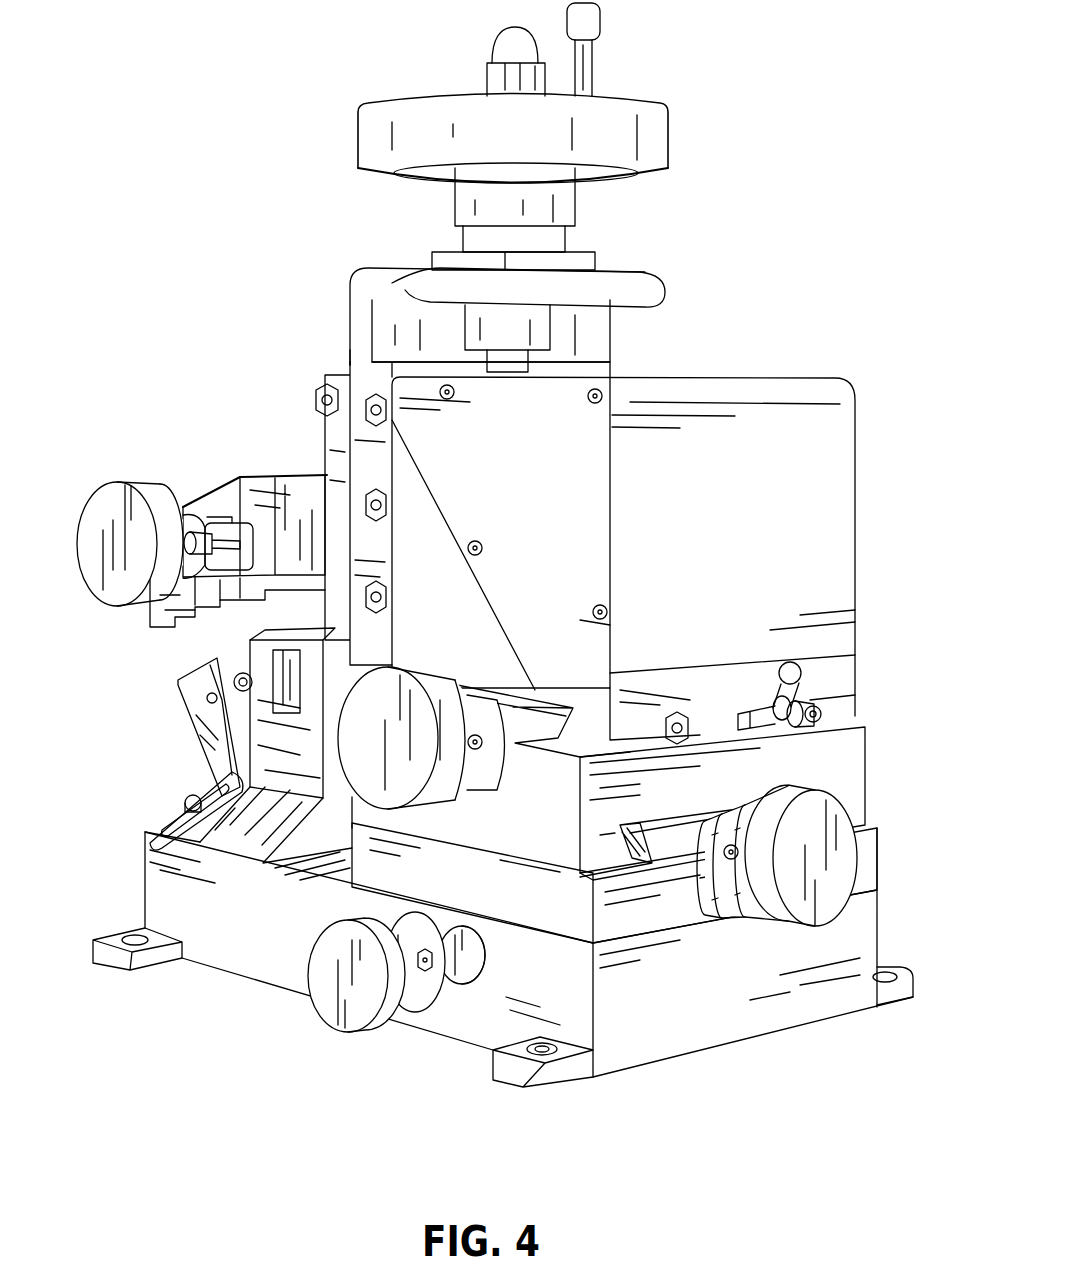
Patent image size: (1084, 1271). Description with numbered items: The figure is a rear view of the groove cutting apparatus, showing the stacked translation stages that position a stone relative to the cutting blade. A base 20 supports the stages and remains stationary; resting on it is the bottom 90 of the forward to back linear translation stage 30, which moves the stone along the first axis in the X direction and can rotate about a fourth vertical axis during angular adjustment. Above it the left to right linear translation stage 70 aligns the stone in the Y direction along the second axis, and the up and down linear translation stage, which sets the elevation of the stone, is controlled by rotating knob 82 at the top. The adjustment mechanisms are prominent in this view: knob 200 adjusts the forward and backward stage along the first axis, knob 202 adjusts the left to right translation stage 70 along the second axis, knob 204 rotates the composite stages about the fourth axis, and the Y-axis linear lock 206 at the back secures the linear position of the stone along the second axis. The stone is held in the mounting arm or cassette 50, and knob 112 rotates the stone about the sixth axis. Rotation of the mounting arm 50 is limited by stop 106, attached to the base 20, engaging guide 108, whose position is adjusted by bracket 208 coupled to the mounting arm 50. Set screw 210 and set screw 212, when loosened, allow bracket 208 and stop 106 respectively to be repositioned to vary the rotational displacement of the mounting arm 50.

The base 20 is at (783, 1007).
The forward to back linear translation stage 30 is at (608, 780).
The mounting arm or cassette 50 is at (233, 477).
The left to right linear translation stage 70 is at (548, 700).
The knob 82 is at (670, 118).
The bottom of the forward to back linear translation stage 90 is at (510, 888).
The stop 106 is at (195, 700).
The guide 108 is at (190, 612).
The knob 112 is at (103, 498).
The knob 200 is at (820, 808).
The knob 202 is at (415, 668).
The knob 204 is at (325, 1000).
The Y-axis linear lock 206 is at (783, 672).
The bracket 208 is at (215, 525).
The set screw 210 is at (152, 585).
The set screw 212 is at (193, 798).